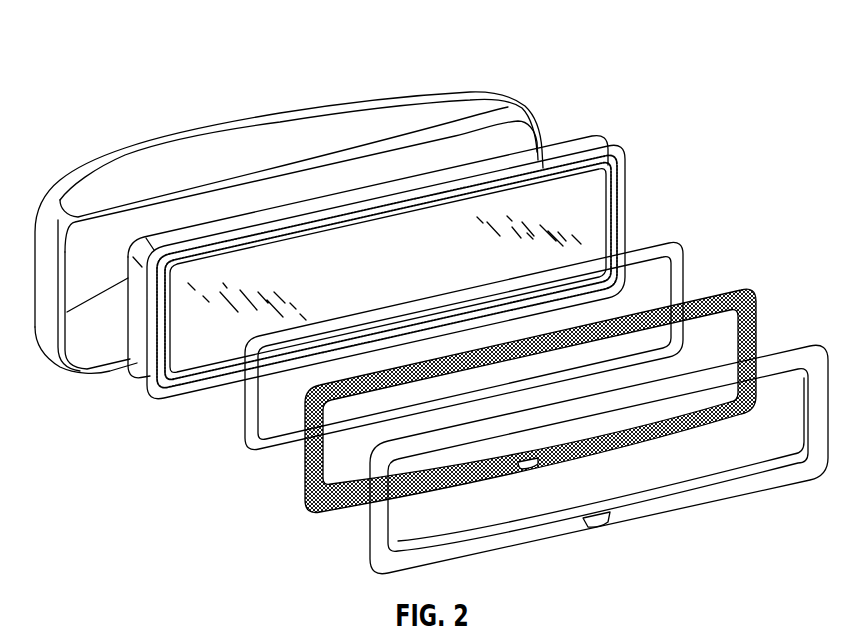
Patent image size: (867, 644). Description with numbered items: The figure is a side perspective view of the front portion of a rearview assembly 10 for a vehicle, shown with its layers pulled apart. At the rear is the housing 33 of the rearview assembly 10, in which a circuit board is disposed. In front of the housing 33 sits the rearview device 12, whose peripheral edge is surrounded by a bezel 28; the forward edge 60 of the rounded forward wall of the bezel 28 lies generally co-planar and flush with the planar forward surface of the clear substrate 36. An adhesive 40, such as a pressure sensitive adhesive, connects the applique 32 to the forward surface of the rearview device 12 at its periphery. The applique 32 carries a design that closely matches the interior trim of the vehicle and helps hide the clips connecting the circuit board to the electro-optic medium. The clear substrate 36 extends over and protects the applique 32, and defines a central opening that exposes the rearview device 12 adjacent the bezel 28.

The rearview assembly 10 is at (719, 149).
The rearview device 12 is at (580, 183).
The bezel 28 is at (480, 163).
The applique 32 is at (751, 298).
The housing 33 is at (355, 125).
The clear substrate 36 is at (820, 350).
The adhesive 40 is at (683, 240).
The forward edge 60 is at (580, 140).